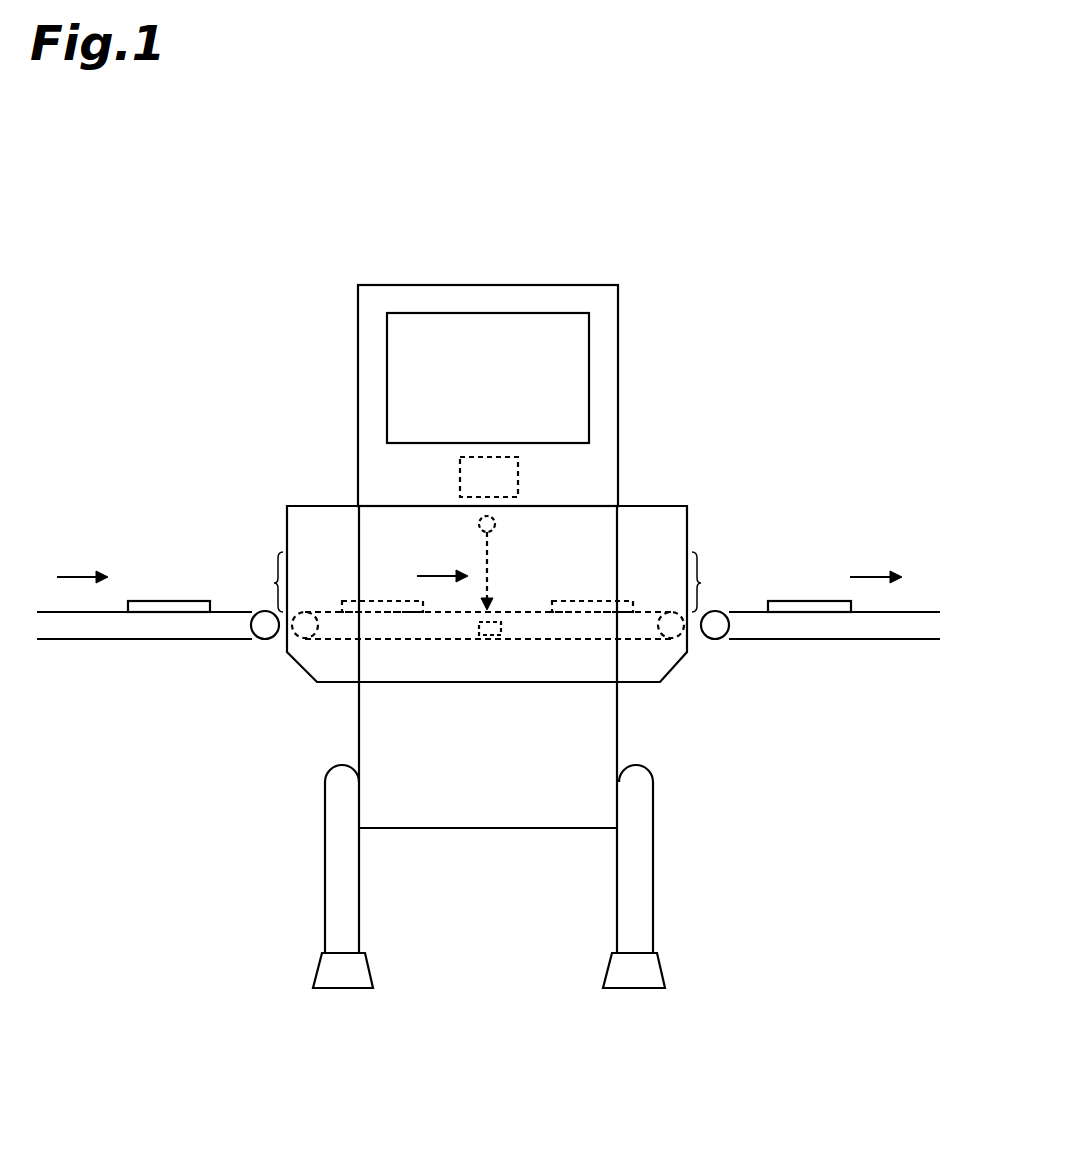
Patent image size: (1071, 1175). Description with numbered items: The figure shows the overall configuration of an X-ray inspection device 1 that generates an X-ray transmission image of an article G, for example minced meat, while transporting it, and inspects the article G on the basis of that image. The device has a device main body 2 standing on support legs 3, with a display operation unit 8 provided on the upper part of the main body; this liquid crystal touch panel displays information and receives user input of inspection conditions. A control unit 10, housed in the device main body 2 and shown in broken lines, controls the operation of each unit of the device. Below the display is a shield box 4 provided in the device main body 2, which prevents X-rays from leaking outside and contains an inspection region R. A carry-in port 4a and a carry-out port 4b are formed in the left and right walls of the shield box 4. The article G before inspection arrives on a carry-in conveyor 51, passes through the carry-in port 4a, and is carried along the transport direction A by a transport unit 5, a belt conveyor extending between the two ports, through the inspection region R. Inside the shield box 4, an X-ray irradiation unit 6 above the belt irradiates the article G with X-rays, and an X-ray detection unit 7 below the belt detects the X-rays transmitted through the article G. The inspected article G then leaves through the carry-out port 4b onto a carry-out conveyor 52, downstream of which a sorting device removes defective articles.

The X-ray inspection device 1 is at (527, 431).
The device main body 2 is at (357, 342).
The support legs 3 is at (325, 873).
The shield box 4 is at (689, 522).
The carry-in port 4a is at (259, 582).
The carry-out port 4b is at (714, 582).
The transport unit 5 is at (349, 640).
The X-ray irradiation unit 6 is at (496, 522).
The X-ray detection unit 7 is at (501, 626).
The display operation unit 8 is at (589, 400).
The control unit 10 is at (459, 477).
The carry-in conveyor 51 is at (124, 640).
The carry-out conveyor 52 is at (893, 640).
The article G is at (161, 600).
The transport direction A is at (431, 576).
The inspection region R is at (537, 569).